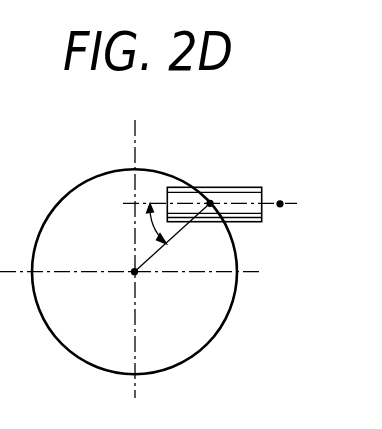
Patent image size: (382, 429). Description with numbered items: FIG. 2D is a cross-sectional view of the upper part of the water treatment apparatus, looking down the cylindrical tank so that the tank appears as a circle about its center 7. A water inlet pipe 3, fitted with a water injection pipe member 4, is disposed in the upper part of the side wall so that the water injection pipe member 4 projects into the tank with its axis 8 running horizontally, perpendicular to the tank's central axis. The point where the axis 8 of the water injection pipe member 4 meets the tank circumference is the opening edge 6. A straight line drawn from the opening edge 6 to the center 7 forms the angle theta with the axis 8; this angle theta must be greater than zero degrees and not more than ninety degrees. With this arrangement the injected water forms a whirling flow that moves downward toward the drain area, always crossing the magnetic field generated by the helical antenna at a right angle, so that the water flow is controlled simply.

The water inlet pipe 3 is at (245, 188).
The water injection pipe member 4 is at (180, 192).
The opening edge 6 is at (210, 203).
The center of the cylinder 7 is at (135, 272).
The axis of the water injection pipe member 8 is at (280, 206).
The angle theta is at (152, 224).